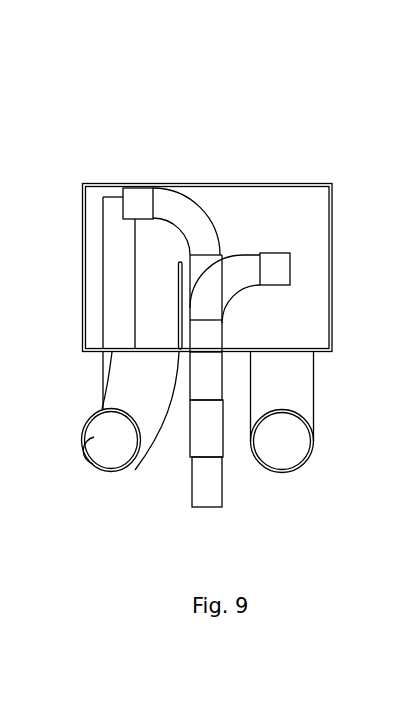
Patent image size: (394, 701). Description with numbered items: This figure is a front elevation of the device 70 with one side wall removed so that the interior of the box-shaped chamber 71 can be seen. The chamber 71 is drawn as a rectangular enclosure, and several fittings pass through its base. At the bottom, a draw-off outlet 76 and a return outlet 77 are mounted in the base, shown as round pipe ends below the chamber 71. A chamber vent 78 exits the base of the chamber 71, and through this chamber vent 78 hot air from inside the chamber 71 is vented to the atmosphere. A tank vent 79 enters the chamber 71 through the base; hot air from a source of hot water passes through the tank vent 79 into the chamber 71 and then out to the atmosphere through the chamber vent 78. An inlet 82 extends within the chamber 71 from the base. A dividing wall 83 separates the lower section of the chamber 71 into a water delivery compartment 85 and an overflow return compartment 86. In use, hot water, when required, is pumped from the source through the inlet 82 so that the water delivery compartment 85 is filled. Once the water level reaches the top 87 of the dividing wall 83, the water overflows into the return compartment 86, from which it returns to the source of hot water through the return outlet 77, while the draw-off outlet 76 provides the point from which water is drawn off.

The device 70 is at (90, 118).
The box-shaped chamber 71 is at (318, 203).
The draw-off outlet 76 is at (147, 440).
The return outlet 77 is at (307, 400).
The chamber vent 78 is at (242, 267).
The tank vent 79 is at (170, 203).
The inlet 82 is at (113, 218).
The dividing wall 83 is at (177, 298).
The water delivery compartment 85 is at (97, 283).
The overflow return compartment 86 is at (317, 322).
The top of the dividing wall 87 is at (182, 262).